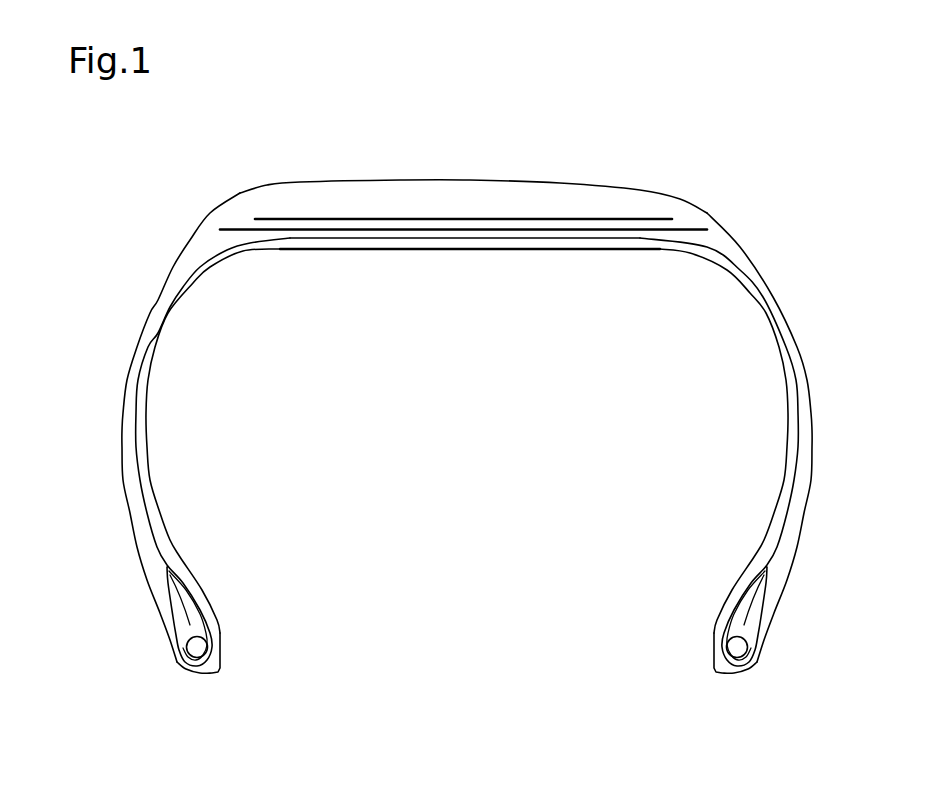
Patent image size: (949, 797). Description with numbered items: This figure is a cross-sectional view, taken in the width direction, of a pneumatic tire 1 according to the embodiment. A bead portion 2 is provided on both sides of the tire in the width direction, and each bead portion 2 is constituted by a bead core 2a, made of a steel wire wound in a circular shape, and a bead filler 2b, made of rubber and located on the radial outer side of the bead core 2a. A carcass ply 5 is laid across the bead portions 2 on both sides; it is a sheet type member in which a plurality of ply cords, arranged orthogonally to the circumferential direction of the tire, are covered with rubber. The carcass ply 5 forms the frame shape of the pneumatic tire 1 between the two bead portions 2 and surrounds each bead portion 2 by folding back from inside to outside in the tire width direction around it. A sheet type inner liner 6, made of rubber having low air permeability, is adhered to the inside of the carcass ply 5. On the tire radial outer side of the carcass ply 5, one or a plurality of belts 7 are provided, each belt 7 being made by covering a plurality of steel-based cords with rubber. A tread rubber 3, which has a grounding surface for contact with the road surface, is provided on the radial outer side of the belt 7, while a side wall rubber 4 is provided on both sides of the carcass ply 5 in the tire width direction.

The pneumatic tire 1 is at (448, 114).
The bead portion 2 is at (469, 624).
The bead core 2a is at (193, 650).
The bead filler 2b is at (186, 617).
The tread rubber 3 is at (545, 190).
The side wall rubber 4 is at (126, 438).
The carcass ply 5 is at (394, 240).
The inner liner 6 is at (146, 423).
The belt 7 is at (465, 218).